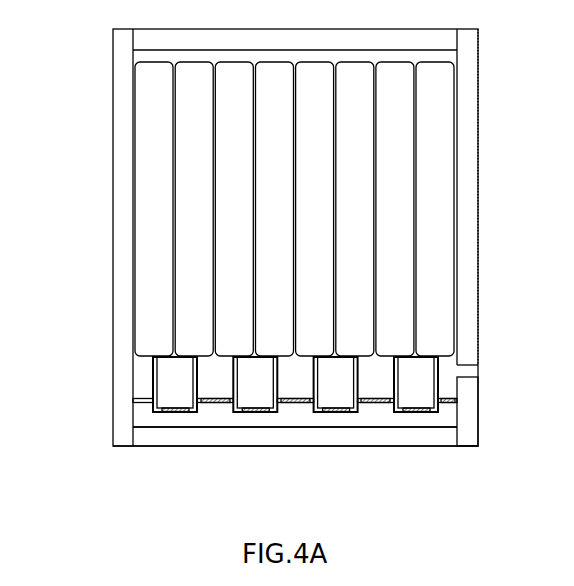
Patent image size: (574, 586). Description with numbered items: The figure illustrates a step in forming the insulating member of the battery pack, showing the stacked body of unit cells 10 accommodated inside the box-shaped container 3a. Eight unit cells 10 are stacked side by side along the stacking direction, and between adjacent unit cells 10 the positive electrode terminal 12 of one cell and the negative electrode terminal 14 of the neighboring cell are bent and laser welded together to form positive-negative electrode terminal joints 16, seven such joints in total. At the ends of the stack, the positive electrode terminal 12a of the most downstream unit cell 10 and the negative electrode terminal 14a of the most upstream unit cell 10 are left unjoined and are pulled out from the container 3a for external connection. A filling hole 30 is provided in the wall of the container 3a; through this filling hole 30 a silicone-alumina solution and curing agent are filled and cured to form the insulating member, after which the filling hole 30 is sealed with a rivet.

The unit cell 10 is at (148, 145).
The positive electrode terminal 12 is at (193, 412).
The positive electrode terminal 12a is at (145, 404).
The negative electrode terminal 14 is at (153, 412).
The negative electrode terminal 14a is at (448, 405).
The positive-negative electrode terminal joint 16 is at (172, 412).
The filling hole 30 is at (465, 377).
The container 3a is at (331, 438).